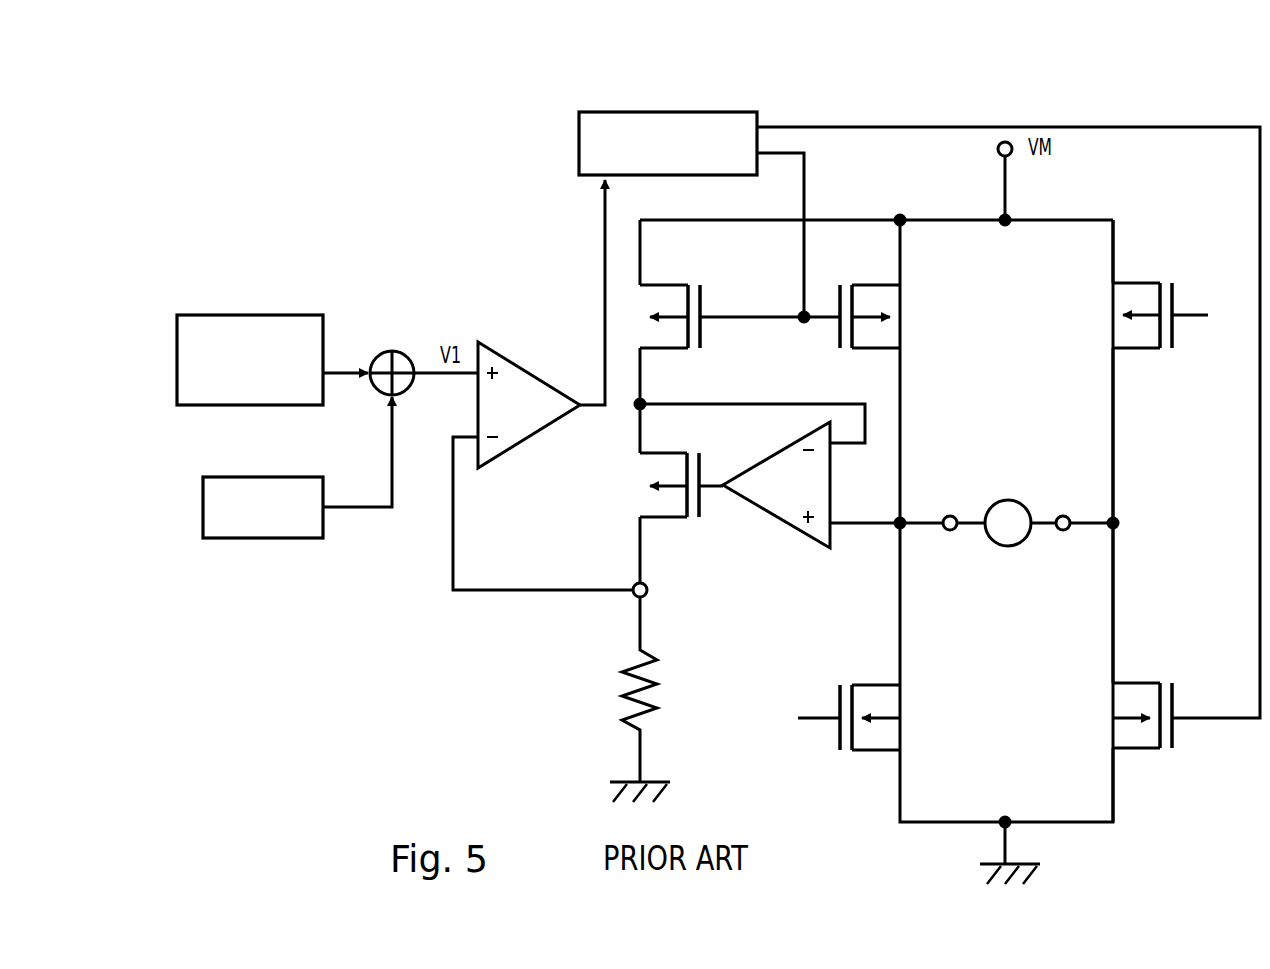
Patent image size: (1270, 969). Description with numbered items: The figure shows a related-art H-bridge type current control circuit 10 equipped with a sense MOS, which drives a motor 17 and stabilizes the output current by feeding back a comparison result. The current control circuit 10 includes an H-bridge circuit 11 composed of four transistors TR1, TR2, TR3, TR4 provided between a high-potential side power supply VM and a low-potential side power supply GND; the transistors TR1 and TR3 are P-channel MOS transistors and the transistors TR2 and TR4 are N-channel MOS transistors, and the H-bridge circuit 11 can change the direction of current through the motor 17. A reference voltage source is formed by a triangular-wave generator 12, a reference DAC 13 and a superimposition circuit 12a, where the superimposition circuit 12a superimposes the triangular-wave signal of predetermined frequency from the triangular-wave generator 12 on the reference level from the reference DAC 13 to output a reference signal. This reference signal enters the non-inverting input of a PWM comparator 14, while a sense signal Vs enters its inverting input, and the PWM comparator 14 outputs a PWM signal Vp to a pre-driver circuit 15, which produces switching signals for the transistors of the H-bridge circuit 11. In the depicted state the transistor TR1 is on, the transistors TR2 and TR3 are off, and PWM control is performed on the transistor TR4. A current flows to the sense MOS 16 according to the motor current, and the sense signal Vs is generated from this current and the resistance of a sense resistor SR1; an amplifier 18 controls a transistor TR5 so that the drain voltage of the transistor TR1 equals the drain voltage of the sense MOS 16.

The current control circuit 10 is at (1003, 78).
The H-bridge circuit 11 is at (1070, 824).
The triangular-wave generator 12 is at (268, 312).
The superimposition circuit 12a is at (380, 351).
The reference DAC 13 is at (281, 474).
The PWM comparator 14 is at (531, 368).
The pre-driver circuit 15 is at (676, 111).
The sense MOS 16 is at (680, 350).
The motor 17 is at (1018, 500).
The amplifier 18 is at (797, 530).
The transistor TR1 is at (860, 350).
The transistor TR2 is at (862, 752).
The transistor TR3 is at (1150, 350).
The transistor TR4 is at (1148, 750).
The transistor TR5 is at (680, 519).
The sense resistor SR1 is at (650, 694).